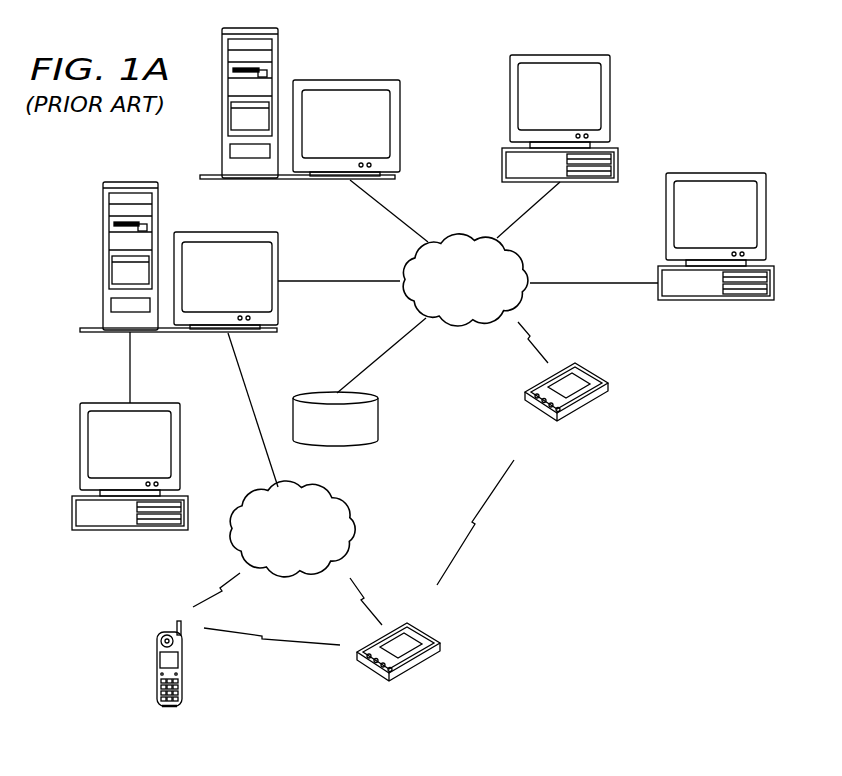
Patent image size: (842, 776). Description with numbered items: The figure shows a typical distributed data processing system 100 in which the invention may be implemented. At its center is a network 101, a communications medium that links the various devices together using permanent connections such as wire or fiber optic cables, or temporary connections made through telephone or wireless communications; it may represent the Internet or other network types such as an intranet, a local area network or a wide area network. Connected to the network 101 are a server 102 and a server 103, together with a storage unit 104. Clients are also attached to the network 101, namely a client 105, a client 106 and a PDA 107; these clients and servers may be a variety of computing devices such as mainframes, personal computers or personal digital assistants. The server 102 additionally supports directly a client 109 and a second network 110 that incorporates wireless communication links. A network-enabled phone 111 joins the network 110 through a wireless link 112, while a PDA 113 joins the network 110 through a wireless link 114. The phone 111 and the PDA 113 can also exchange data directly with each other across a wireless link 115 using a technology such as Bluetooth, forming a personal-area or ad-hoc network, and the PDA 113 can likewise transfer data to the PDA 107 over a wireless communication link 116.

The distributed data processing system 100 is at (688, 104).
The network 101 is at (461, 330).
The server 102 is at (210, 283).
The server 103 is at (330, 131).
The storage unit 104 is at (378, 420).
The client 105 is at (542, 104).
The client 106 is at (699, 222).
The PDA 107 is at (583, 405).
The client 109 is at (113, 453).
The network 110 is at (241, 492).
The network-enabled phone 111 is at (156, 677).
The wireless link 112 is at (204, 600).
The PDA 113 is at (418, 667).
The wireless link 114 is at (358, 590).
The wireless link 115 is at (304, 643).
The wireless communication link 116 is at (494, 493).